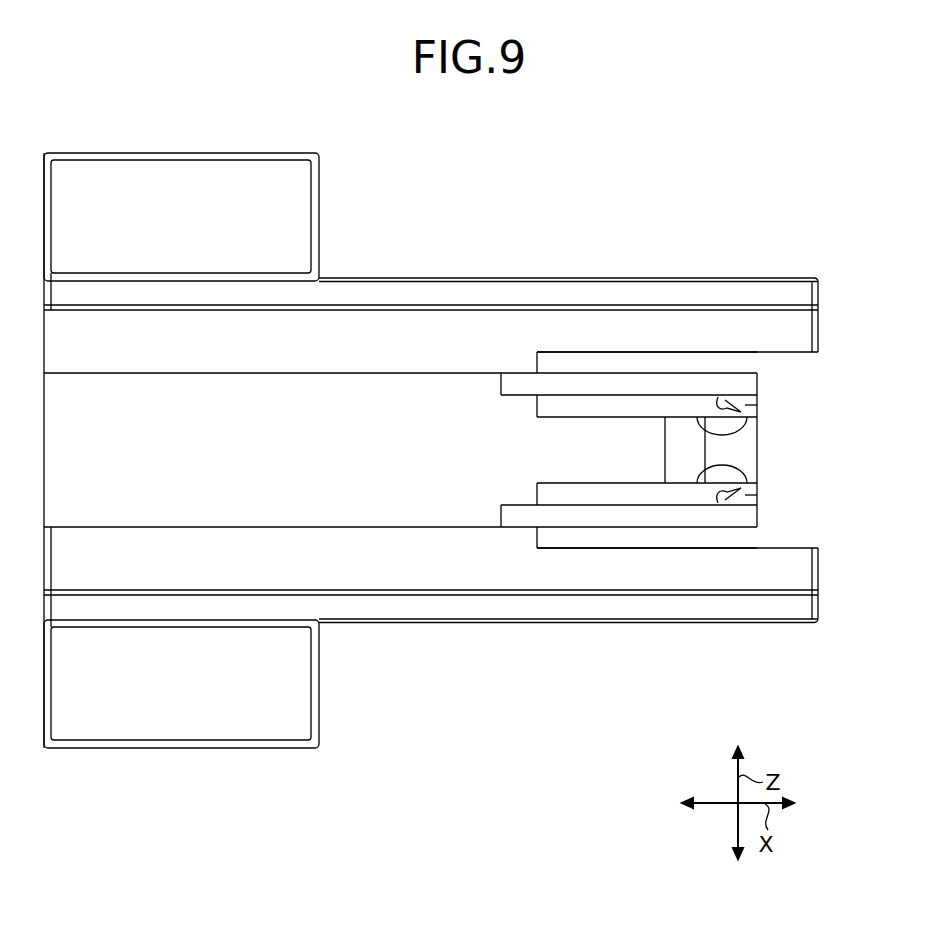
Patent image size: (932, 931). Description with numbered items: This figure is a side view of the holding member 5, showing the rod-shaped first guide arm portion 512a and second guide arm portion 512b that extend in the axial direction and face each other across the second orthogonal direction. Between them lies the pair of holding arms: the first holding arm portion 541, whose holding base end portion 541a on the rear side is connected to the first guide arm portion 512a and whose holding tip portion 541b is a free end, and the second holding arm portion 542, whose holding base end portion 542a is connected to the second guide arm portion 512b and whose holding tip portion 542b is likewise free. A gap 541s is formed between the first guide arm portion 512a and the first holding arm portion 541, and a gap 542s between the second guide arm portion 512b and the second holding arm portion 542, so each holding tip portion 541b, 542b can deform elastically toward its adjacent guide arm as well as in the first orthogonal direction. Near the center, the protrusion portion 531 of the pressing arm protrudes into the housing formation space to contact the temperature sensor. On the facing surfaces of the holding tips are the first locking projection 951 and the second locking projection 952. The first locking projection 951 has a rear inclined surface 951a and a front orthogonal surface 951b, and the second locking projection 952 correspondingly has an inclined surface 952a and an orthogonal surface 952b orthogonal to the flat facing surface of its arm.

The holding member 5 is at (46, 146).
The first guide arm portion 512a is at (819, 297).
The second guide arm portion 512b is at (819, 603).
The protrusion portion 531 is at (680, 433).
The first holding arm portion 541 is at (588, 372).
The holding base end portion 541a is at (501, 388).
The holding tip portion 541b is at (757, 384).
The gap 541s is at (744, 362).
The second holding arm portion 542 is at (588, 528).
The holding base end portion 542a is at (501, 512).
The holding tip portion 542b is at (757, 516).
The gap 542s is at (744, 538).
The first locking projection 951 is at (697, 417).
The inclined surface 951a is at (718, 397).
The orthogonal surface 951b is at (757, 405).
The second locking projection 952 is at (697, 483).
The inclined surface 952a is at (718, 503).
The orthogonal surface 952b is at (757, 495).